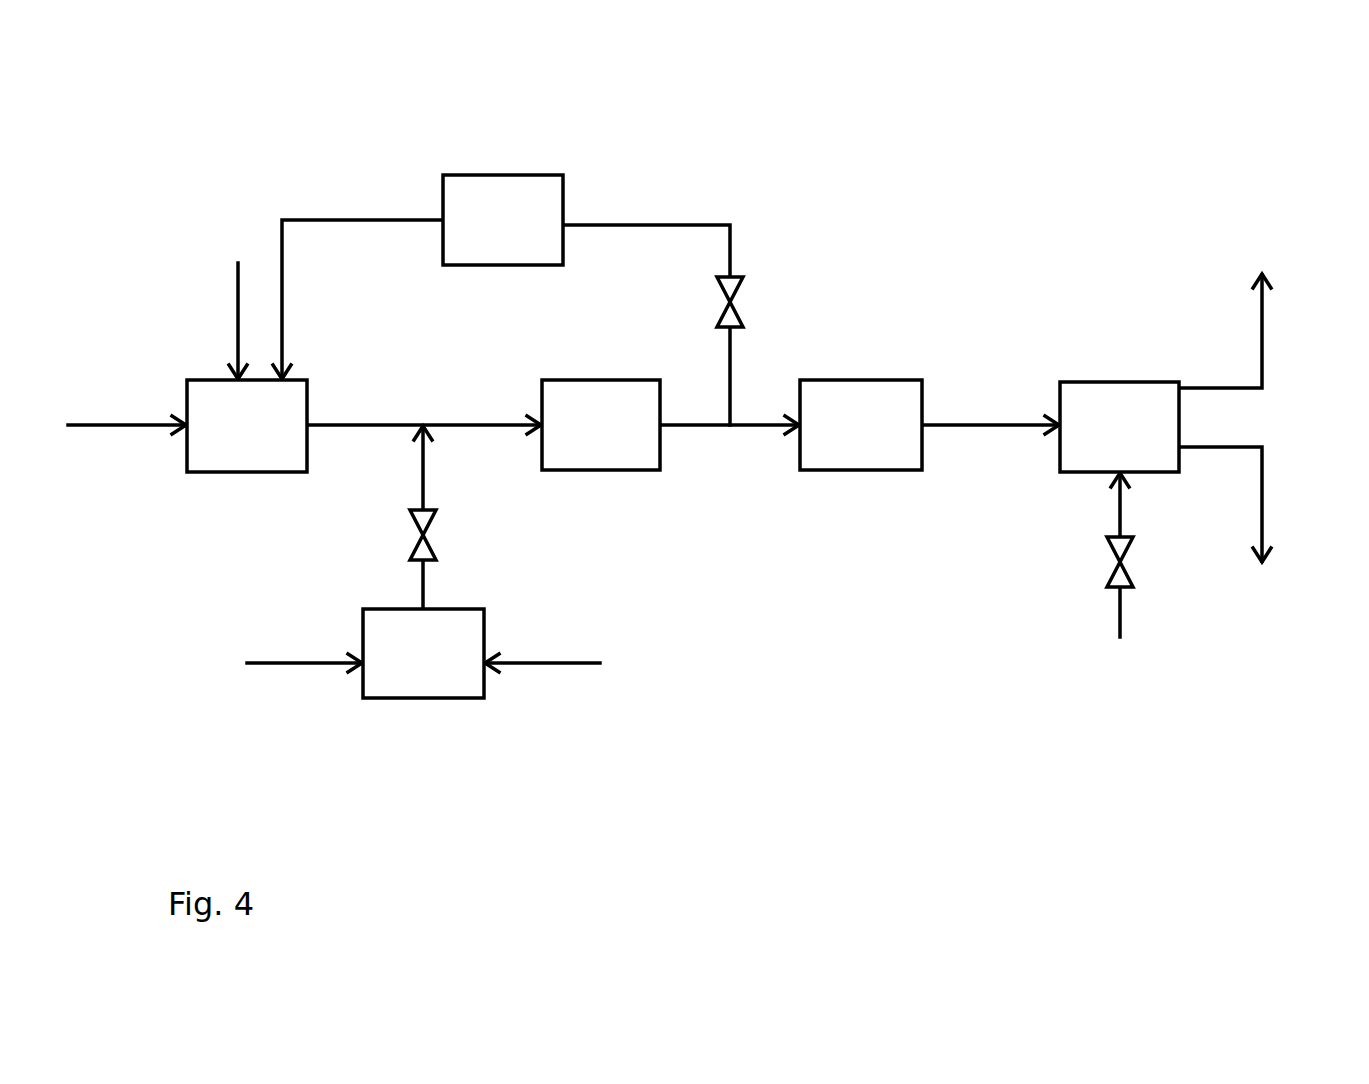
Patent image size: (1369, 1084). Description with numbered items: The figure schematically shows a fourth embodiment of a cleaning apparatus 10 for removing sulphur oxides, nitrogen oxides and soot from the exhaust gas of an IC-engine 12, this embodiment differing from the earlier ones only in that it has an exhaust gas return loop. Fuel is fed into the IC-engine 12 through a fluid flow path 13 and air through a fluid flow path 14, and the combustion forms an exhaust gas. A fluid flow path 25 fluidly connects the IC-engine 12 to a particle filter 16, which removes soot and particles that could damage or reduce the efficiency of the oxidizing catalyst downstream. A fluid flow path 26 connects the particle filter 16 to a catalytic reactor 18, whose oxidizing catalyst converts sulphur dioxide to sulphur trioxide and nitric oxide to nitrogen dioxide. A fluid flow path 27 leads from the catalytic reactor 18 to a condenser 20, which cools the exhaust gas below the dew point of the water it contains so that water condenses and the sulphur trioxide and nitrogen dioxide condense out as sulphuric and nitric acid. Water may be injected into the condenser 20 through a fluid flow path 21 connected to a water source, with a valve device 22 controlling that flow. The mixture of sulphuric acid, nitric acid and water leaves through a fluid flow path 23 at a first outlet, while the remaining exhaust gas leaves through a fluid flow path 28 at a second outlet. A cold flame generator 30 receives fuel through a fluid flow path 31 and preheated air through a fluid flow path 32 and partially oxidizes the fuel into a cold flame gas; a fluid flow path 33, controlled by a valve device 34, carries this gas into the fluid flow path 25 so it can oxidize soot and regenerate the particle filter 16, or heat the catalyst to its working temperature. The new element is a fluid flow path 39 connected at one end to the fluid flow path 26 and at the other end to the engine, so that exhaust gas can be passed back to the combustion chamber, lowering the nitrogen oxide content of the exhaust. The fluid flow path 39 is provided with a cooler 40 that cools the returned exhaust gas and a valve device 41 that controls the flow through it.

The cleaning apparatus 10 is at (862, 255).
The IC-engine 12 is at (237, 474).
The fluid flow path 13 is at (107, 423).
The fluid flow path 14 is at (236, 300).
The particle filter 16 is at (588, 380).
The catalytic reactor 18 is at (860, 475).
The condenser 20 is at (1095, 380).
The fluid flow path 21 is at (1116, 505).
The valve device 22 is at (1124, 565).
The fluid flow path 23 is at (1265, 495).
The fluid flow path 25 is at (352, 423).
The fluid flow path 26 is at (767, 428).
The fluid flow path 27 is at (968, 423).
The fluid flow path 28 is at (1265, 348).
The cold flame generator 30 is at (423, 700).
The fluid flow path 31 is at (303, 665).
The fluid flow path 32 is at (550, 661).
The fluid flow path 33 is at (428, 476).
The valve device 34 is at (430, 540).
The fluid flow path 39 is at (390, 219).
The cooler 40 is at (500, 175).
The valve device 41 is at (735, 302).